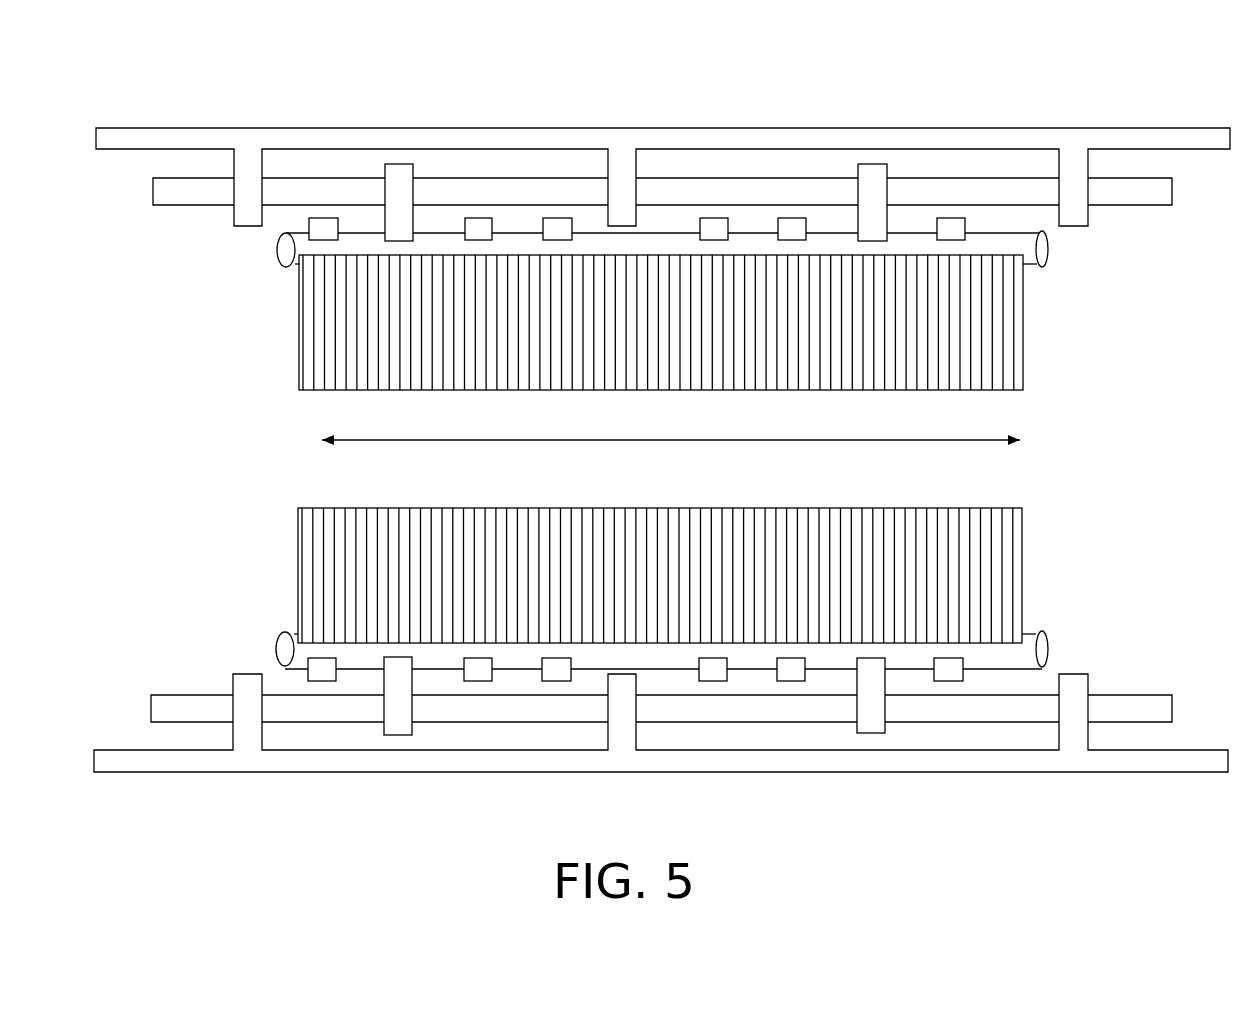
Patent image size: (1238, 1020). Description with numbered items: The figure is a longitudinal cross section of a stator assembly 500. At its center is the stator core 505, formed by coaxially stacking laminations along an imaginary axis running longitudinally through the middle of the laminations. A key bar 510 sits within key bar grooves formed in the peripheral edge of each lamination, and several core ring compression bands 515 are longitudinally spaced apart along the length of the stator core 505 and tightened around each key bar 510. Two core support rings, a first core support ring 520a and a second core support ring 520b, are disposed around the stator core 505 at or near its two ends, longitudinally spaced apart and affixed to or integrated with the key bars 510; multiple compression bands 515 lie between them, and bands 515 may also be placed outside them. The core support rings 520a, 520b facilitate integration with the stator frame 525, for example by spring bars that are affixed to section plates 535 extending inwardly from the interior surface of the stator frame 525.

The stator assembly 500 is at (167, 815).
The stator core 505 is at (958, 306).
The key bar 510 is at (295, 265).
The core ring compression band 515 is at (955, 218).
The first core support ring 520a is at (403, 163).
The second core support ring 520b is at (872, 163).
The stator frame 525 is at (292, 140).
The section plate 535 is at (248, 178).